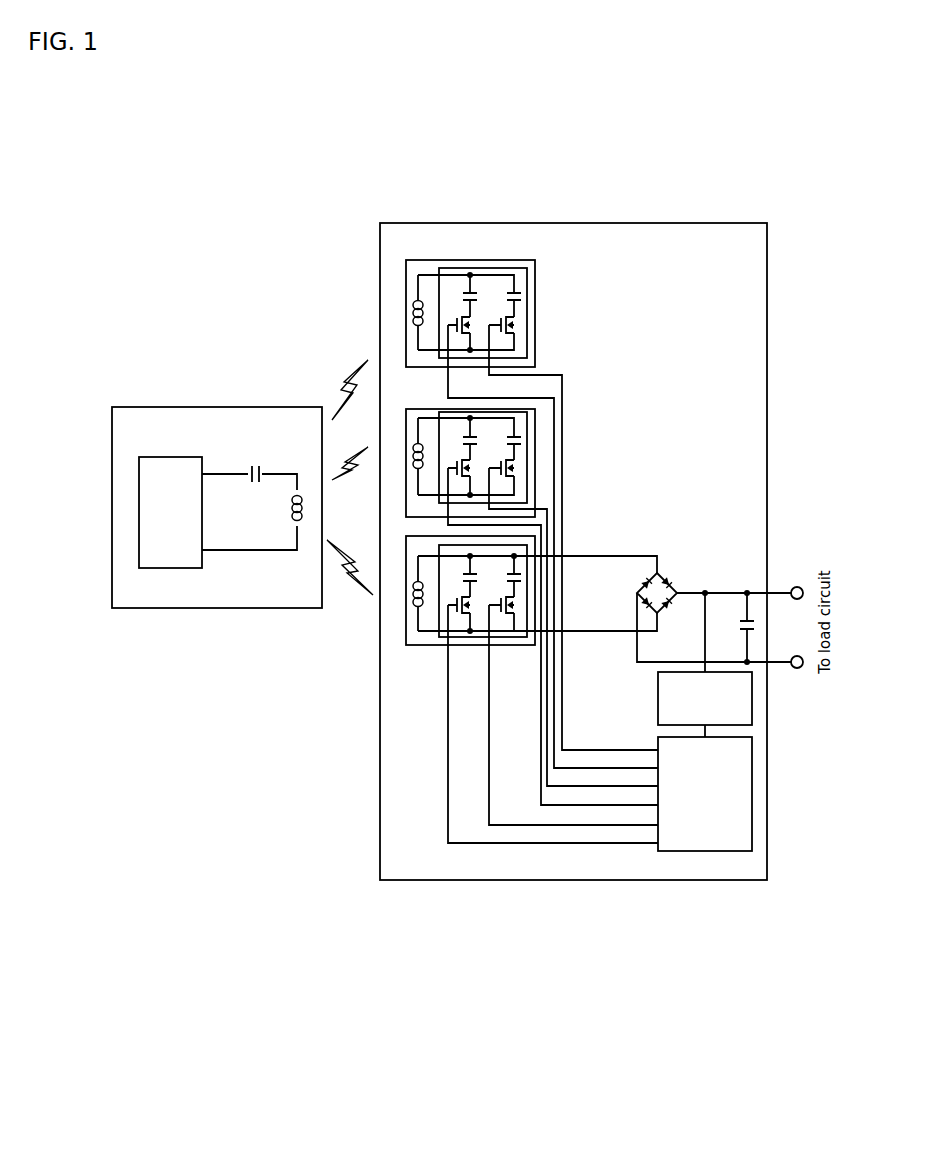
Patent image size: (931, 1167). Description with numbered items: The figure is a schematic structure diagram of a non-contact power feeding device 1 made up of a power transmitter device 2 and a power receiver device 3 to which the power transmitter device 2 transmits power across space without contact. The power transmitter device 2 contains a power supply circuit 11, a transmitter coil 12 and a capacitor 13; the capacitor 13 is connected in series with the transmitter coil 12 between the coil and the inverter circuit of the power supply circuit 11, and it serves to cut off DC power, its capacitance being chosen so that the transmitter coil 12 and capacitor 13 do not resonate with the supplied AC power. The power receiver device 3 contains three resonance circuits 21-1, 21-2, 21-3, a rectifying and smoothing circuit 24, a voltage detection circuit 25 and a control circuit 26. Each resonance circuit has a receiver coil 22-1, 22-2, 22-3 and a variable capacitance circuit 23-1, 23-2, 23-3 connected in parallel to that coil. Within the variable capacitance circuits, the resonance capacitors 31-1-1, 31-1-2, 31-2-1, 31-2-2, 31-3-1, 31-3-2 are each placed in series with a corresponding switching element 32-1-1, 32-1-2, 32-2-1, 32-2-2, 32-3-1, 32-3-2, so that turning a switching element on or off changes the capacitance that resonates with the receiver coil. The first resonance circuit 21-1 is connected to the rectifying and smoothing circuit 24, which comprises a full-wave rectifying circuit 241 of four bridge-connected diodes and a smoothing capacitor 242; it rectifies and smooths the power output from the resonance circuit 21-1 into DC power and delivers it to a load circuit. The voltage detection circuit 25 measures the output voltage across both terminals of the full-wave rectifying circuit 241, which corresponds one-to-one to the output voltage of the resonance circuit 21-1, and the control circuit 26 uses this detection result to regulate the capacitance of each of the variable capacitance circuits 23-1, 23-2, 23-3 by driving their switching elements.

The non-contact power feeding device 1 is at (753, 927).
The power transmitter device 2 is at (262, 608).
The power receiver device 3 is at (673, 880).
The power supply circuit 11 is at (202, 562).
The transmitter coil 12 is at (291, 507).
The capacitor 13 is at (258, 463).
The resonance circuit 21-1 is at (415, 645).
The resonance circuit 21-2 is at (527, 408).
The resonance circuit 21-3 is at (535, 266).
The receiver coil 22-1 is at (413, 605).
The receiver coil 22-2 is at (413, 468).
The receiver coil 22-3 is at (413, 305).
The variable capacitance circuit 23-1 is at (515, 637).
The variable capacitance circuit 23-2 is at (447, 412).
The variable capacitance circuit 23-3 is at (527, 350).
The resonance capacitor 31-1-1 is at (480, 577).
The resonance capacitor 31-1-2 is at (523, 577).
The resonance capacitor 31-2-1 is at (480, 437).
The resonance capacitor 31-2-2 is at (523, 437).
The resonance capacitor 31-3-1 is at (480, 293).
The resonance capacitor 31-3-2 is at (523, 295).
The switching element 32-1-1 is at (465, 618).
The switching element 32-1-2 is at (518, 600).
The switching element 32-2-1 is at (472, 465).
The switching element 32-2-2 is at (520, 468).
The switching element 32-3-1 is at (472, 322).
The switching element 32-3-2 is at (519, 318).
The rectifying and smoothing circuit 24 is at (748, 526).
The full-wave rectifying circuit 241 is at (663, 571).
The smoothing capacitor 242 is at (743, 619).
The voltage detection circuit 25 is at (752, 702).
The control circuit 26 is at (752, 830).